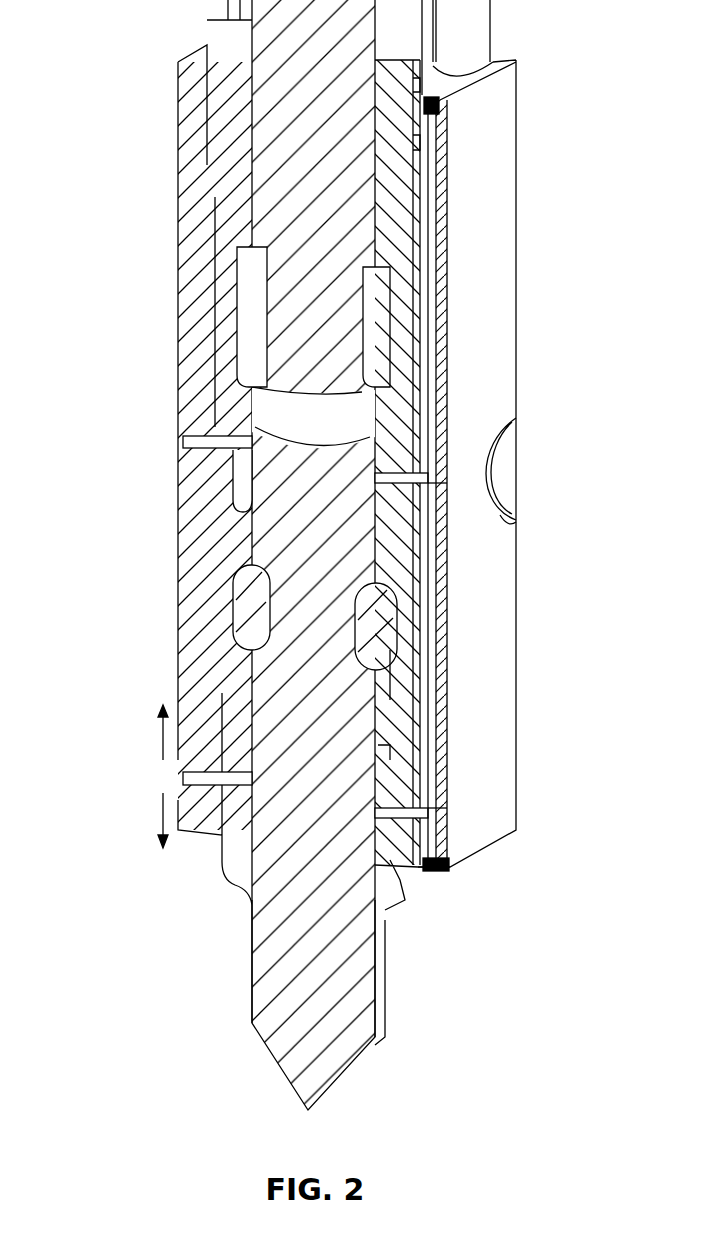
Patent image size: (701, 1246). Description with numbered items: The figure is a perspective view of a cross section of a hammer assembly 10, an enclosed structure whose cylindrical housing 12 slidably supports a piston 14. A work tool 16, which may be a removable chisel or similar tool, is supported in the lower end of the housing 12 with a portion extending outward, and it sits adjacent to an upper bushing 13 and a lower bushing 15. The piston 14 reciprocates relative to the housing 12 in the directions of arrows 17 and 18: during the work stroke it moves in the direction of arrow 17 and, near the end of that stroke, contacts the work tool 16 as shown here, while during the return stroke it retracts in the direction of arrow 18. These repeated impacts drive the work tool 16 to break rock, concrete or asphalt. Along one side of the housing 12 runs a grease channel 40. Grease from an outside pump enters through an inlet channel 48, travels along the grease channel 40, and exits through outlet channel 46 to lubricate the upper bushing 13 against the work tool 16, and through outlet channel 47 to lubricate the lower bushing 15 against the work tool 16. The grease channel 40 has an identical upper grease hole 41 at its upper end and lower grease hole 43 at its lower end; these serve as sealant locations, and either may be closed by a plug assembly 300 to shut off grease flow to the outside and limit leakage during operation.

The hammer assembly 10 is at (125, 690).
The cylindrical housing 12 is at (502, 628).
The upper bushing 13 is at (400, 520).
The piston 14 is at (265, 168).
The lower bushing 15 is at (400, 760).
The work tool 16 is at (260, 965).
The arrow 17 is at (160, 814).
The arrow 18 is at (160, 735).
The grease channel 40 is at (433, 262).
The upper grease hole 41 is at (424, 88).
The lower grease hole 43 is at (427, 870).
The outlet channel 46 is at (433, 480).
The outlet channel 47 is at (400, 813).
The inlet channel 48 is at (428, 150).
The plug assembly 300 is at (440, 97).